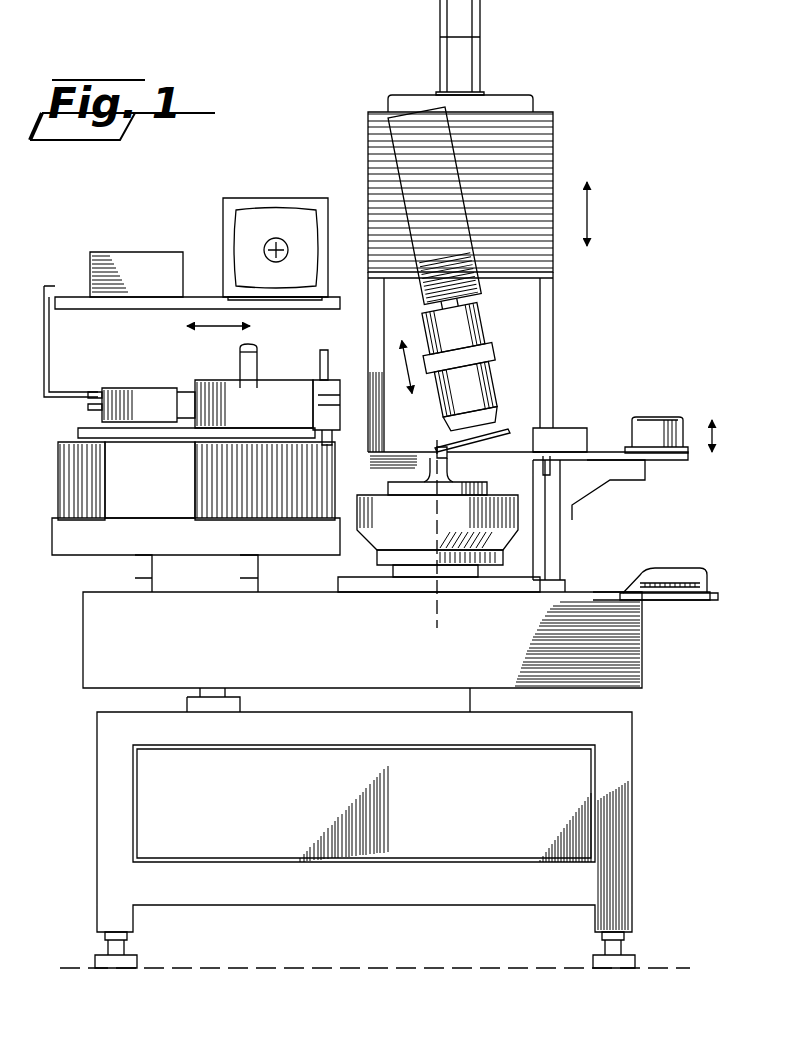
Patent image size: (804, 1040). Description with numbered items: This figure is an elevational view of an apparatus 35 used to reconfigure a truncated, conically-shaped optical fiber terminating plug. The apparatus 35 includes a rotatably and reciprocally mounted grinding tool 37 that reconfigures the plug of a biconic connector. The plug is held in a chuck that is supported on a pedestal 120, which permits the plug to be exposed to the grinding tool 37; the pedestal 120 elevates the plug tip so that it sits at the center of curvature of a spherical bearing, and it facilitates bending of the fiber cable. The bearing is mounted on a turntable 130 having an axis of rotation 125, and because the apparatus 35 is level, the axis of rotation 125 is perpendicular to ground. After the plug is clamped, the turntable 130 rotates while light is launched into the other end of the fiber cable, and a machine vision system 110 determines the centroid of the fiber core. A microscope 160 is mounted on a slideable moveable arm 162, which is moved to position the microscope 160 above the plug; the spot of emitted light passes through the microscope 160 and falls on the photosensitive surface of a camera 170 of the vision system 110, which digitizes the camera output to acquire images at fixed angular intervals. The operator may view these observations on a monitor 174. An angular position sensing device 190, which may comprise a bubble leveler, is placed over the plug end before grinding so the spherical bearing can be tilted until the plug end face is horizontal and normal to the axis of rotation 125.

The apparatus 35 is at (320, 145).
The grinding tool 37 is at (505, 436).
The machine vision system 110 is at (195, 237).
The pedestal 120 is at (447, 470).
The axis of rotation 125 is at (437, 612).
The turntable 130 is at (520, 513).
The microscope 160 is at (340, 385).
The slideable moveable arm 162 is at (78, 433).
The camera 170 is at (142, 397).
The monitor 174 is at (245, 198).
The angular position sensing device 190 is at (663, 416).